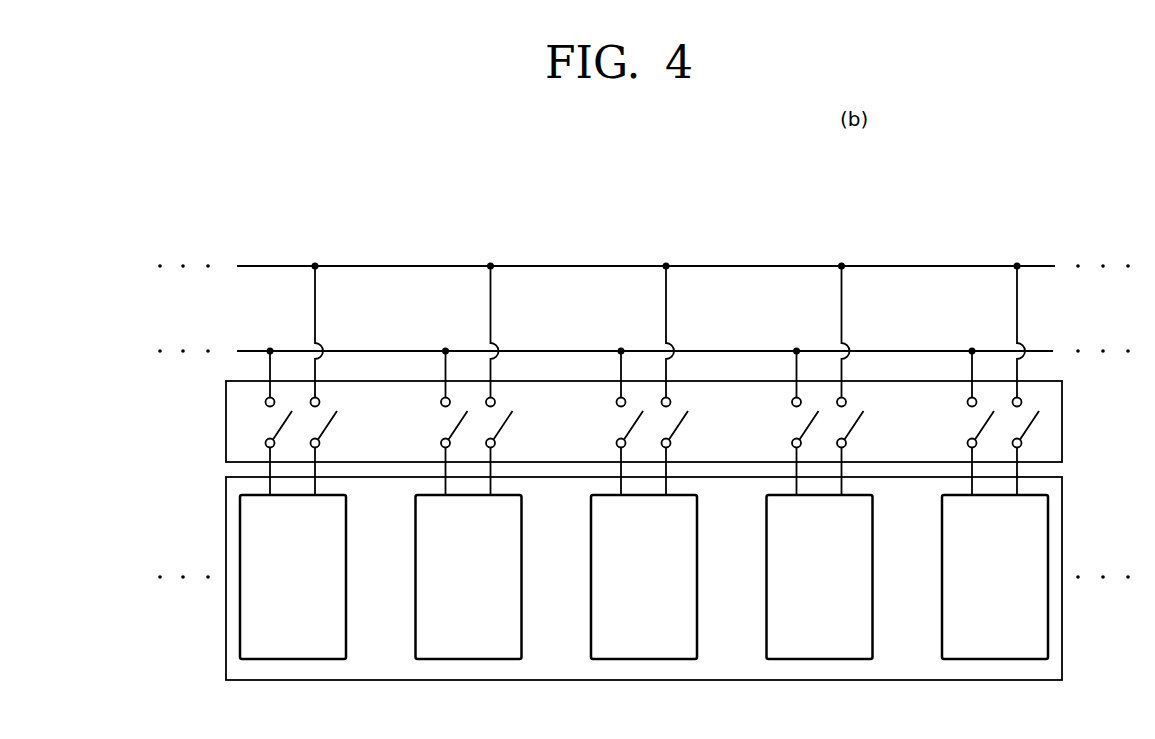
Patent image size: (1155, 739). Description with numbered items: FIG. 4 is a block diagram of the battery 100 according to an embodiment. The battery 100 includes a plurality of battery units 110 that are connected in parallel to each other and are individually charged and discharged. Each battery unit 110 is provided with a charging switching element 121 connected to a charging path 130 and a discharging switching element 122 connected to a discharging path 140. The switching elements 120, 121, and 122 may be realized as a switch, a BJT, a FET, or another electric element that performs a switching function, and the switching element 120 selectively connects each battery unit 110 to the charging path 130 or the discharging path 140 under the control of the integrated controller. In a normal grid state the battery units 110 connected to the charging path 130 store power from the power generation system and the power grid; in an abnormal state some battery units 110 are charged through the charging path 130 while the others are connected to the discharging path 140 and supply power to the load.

The battery 100 is at (940, 214).
The battery unit 110 is at (1062, 525).
The switching element 120 is at (1062, 412).
The charging switching element 121 is at (265, 441).
The discharging switching element 122 is at (320, 443).
The charging path 130 is at (367, 351).
The discharging path 140 is at (717, 266).